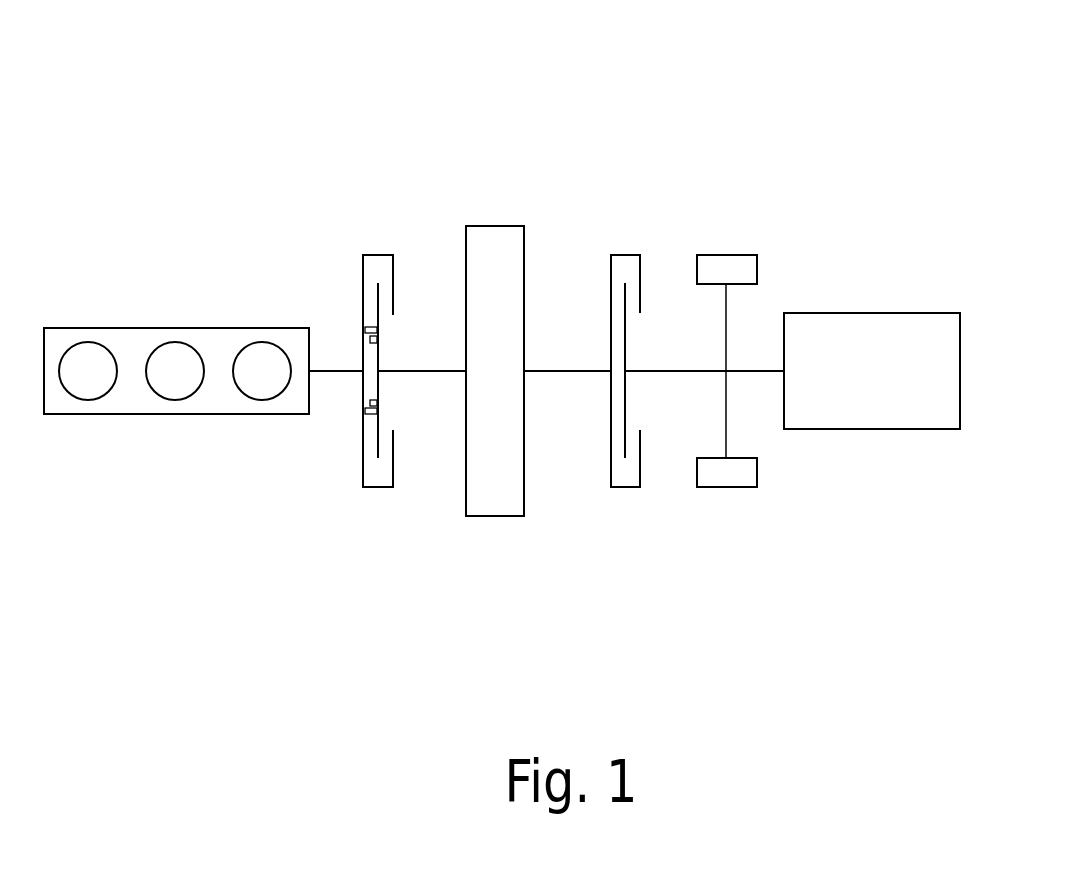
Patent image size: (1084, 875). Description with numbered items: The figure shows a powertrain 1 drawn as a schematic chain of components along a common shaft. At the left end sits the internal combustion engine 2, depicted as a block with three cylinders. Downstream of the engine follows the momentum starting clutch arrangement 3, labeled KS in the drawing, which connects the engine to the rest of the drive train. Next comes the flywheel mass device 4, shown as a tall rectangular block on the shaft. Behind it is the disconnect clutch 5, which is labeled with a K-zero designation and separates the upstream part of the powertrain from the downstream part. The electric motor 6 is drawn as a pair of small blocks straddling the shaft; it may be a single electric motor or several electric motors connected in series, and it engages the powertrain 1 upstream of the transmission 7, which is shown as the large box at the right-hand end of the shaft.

The powertrain 1 is at (238, 105).
The internal combustion engine 2 is at (132, 343).
The momentum starting clutch arrangement 3 is at (373, 254).
The flywheel mass device 4 is at (490, 225).
The disconnect clutch 5 is at (623, 253).
The electric motor 6 is at (724, 253).
The transmission 7 is at (888, 312).